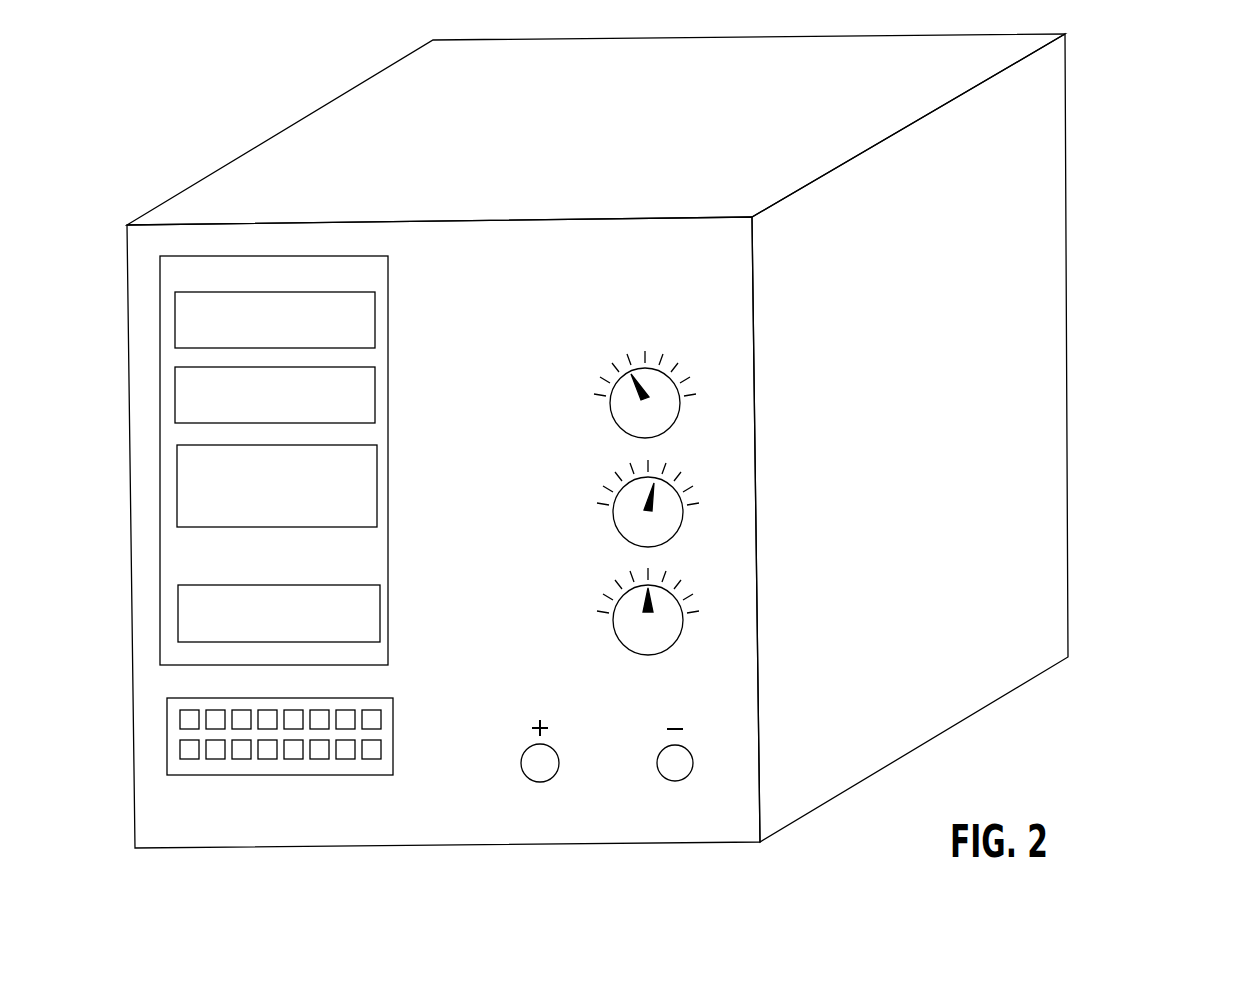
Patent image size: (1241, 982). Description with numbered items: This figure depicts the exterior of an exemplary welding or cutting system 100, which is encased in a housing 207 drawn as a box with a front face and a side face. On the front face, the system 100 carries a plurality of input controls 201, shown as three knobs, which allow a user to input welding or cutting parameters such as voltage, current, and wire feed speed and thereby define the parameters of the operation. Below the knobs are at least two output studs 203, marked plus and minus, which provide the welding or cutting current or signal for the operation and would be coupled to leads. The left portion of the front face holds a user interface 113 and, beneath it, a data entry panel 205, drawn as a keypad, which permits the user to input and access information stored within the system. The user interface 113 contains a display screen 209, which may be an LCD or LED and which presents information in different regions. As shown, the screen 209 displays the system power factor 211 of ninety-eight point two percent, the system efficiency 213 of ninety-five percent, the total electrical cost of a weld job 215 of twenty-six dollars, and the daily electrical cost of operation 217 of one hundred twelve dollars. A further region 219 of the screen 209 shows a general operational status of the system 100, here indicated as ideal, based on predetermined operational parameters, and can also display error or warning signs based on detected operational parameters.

The system 100 is at (646, 464).
The user interface 113 is at (388, 470).
The input controls 201 is at (680, 415).
The output studs 203 is at (528, 779).
The data entry panel 205 is at (167, 726).
The housing 207 is at (1018, 488).
The display screen 209 is at (327, 553).
The system power factor display 211 is at (175, 320).
The system efficiency display 213 is at (175, 405).
The weld job electrical cost display 215 is at (177, 462).
The daily electrical cost display 217 is at (177, 497).
The operational status display 219 is at (380, 608).